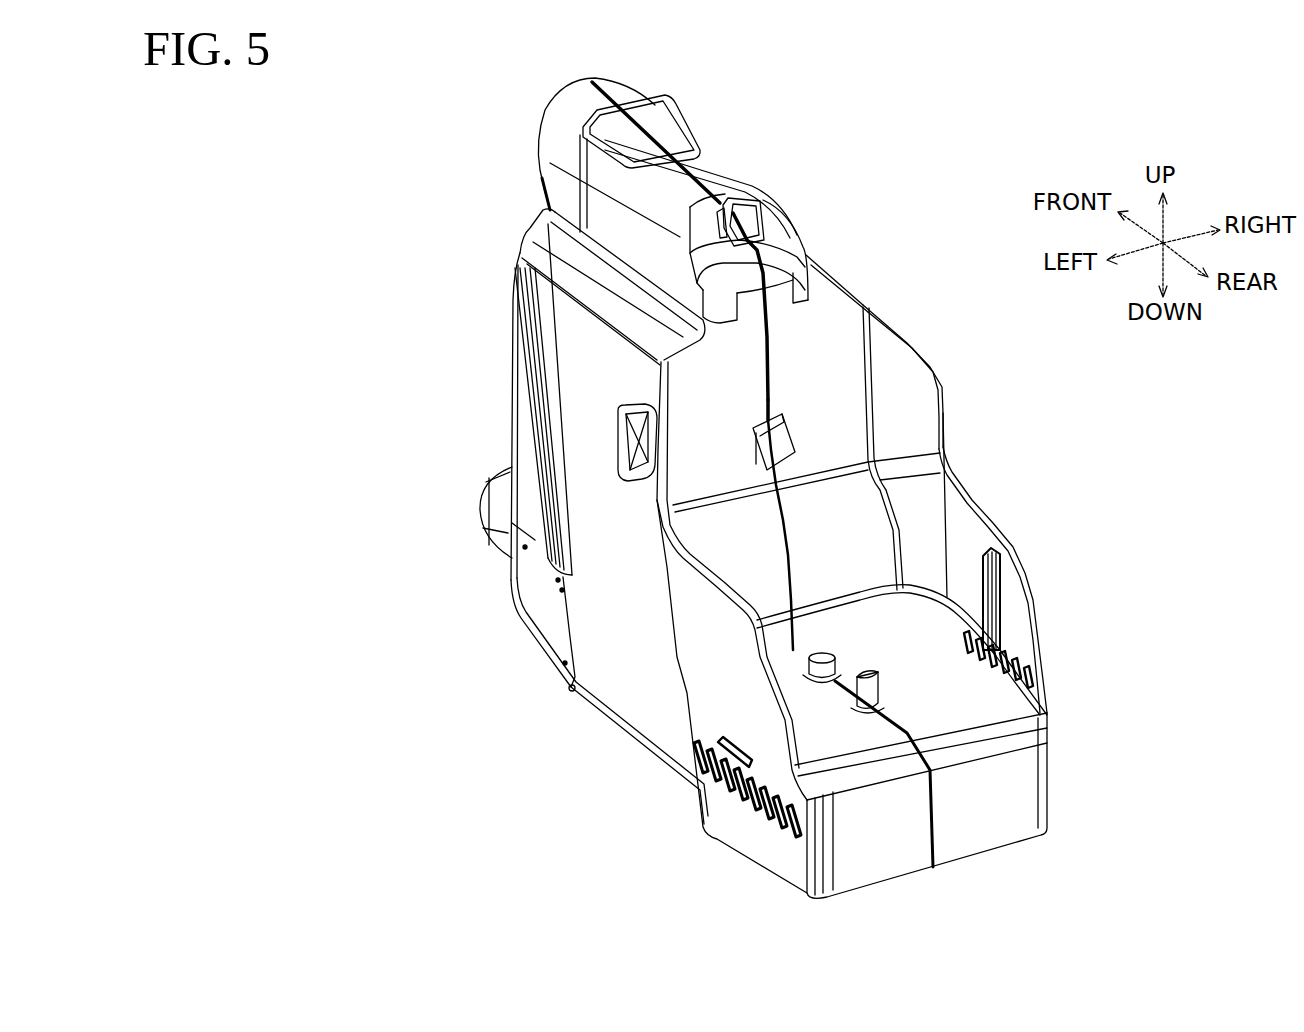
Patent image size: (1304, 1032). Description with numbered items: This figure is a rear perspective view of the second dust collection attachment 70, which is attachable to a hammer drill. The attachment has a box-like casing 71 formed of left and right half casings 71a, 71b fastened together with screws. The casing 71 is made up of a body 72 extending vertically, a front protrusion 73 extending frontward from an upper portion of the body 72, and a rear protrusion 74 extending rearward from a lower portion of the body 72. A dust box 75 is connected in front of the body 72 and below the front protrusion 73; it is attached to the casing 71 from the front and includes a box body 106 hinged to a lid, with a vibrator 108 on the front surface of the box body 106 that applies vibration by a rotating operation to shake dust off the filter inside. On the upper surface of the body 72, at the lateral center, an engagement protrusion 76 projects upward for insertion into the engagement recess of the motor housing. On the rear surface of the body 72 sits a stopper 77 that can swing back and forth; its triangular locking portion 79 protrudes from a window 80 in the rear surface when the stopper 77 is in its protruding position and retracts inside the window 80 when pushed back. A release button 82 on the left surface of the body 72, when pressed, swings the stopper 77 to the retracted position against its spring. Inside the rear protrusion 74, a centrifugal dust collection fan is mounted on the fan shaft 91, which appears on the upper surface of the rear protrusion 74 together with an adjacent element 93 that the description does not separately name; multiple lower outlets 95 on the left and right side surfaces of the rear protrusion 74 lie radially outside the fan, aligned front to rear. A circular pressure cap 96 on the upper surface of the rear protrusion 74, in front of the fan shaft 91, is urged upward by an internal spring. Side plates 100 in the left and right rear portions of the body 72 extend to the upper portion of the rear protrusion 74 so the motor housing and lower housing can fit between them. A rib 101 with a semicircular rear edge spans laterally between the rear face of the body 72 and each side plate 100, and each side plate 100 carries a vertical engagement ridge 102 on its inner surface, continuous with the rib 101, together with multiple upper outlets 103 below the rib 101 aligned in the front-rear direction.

The second attachment 70 is at (813, 193).
The casing 71 is at (740, 173).
The left half casing 71a is at (553, 313).
The right half casing 71b is at (850, 307).
The body 72 is at (567, 407).
The front protrusion 73 is at (708, 173).
The rear protrusion 74 is at (1020, 797).
The dust box 75 is at (506, 585).
The engagement protrusion 76 is at (757, 210).
The stopper 77 is at (737, 474).
The locking portion 79 is at (781, 447).
The window 80 is at (757, 448).
The release button 82 is at (636, 473).
The fan shaft 91 is at (872, 690).
The terminal cap 93 is at (877, 673).
The lower outlets 95 is at (707, 777).
The pressure cap 96 is at (820, 650).
The side plates 100 is at (970, 523).
The rib 101 is at (863, 605).
The engagement ridge 102 is at (1000, 573).
The upper outlets 103 is at (1020, 643).
The box body 106 is at (530, 607).
The vibrator 108 is at (490, 490).